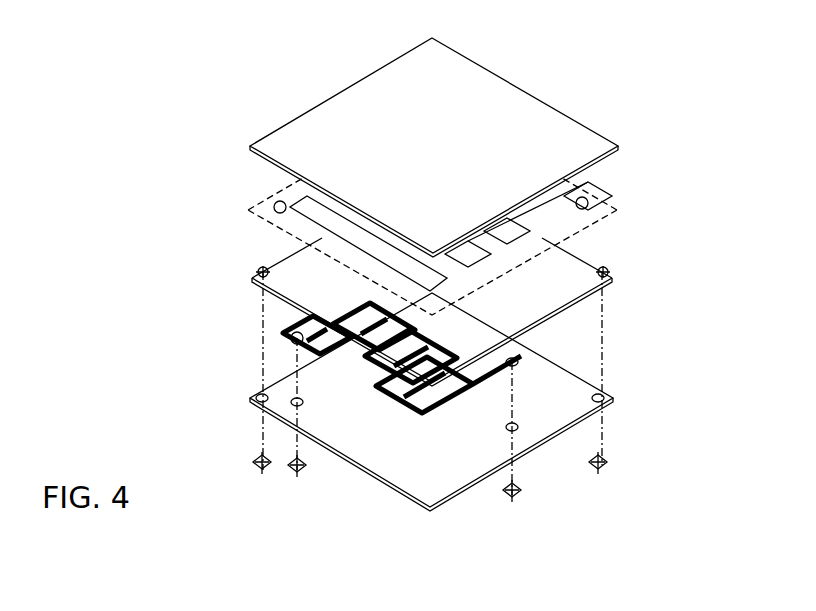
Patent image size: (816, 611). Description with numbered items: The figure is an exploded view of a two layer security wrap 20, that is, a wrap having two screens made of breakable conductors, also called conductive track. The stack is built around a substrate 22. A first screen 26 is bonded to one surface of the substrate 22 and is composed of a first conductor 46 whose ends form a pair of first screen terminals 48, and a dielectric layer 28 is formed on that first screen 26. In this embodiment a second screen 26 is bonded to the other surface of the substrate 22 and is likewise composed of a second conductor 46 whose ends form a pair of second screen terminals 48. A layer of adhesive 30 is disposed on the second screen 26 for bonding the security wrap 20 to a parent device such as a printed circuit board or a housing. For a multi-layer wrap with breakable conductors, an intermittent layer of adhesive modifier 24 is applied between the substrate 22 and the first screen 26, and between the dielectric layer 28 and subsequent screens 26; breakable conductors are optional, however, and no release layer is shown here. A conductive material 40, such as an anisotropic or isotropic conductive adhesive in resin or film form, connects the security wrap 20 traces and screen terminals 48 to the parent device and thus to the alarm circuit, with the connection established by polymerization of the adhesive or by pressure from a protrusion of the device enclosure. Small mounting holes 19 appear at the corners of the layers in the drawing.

The security wrap 20 is at (256, 72).
The dielectric layer 28 is at (557, 130).
The conductive material 40 is at (587, 202).
The screen 26 is at (580, 185).
The screen terminals 48 is at (279, 201).
The substrate 22 is at (577, 270).
The mounting holes 19 is at (259, 270).
The conductor 46 is at (287, 330).
The layer of adhesive 30 is at (577, 393).
The adhesive modifier 24 is at (604, 466).